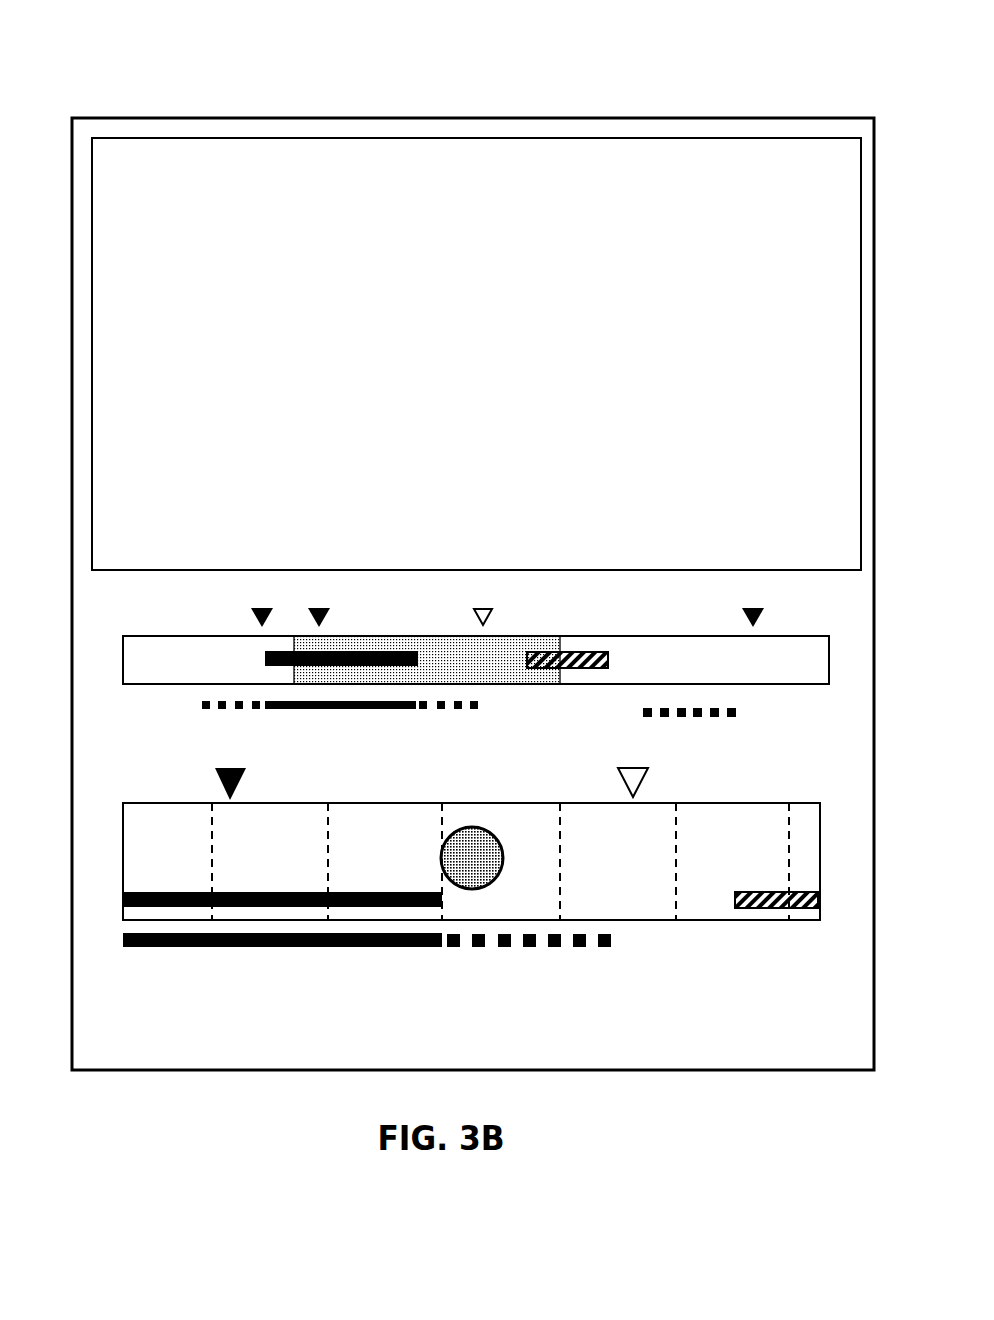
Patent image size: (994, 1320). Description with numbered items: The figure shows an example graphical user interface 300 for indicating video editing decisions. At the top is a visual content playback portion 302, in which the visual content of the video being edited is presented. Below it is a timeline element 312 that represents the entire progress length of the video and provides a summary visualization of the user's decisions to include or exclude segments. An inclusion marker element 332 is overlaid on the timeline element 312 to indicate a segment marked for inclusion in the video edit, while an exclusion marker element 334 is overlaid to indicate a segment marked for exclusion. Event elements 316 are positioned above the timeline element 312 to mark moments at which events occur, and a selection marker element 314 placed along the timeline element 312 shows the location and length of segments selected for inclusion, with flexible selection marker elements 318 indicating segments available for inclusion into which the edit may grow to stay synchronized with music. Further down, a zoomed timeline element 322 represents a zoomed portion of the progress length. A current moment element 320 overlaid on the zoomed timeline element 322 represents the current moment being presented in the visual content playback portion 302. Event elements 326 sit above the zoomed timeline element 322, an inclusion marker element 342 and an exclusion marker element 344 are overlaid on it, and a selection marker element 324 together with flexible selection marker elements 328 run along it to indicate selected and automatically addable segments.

The graphical user interface 300 is at (497, 118).
The visual content playback portion 302 is at (476, 354).
The timeline element 312 is at (476, 660).
The selection marker element 314 is at (350, 710).
The event element 316 is at (320, 608).
The flexible selection marker element 318 is at (226, 709).
The current moment element 320 is at (490, 885).
The zoomed timeline element 322 is at (471, 861).
The selection marker element 324 is at (312, 947).
The event element 326 is at (226, 768).
The flexible selection marker element 328 is at (475, 947).
The inclusion marker element 332 is at (421, 651).
The exclusion marker element 334 is at (582, 651).
The inclusion marker element 342 is at (328, 891).
The exclusion marker element 344 is at (758, 892).